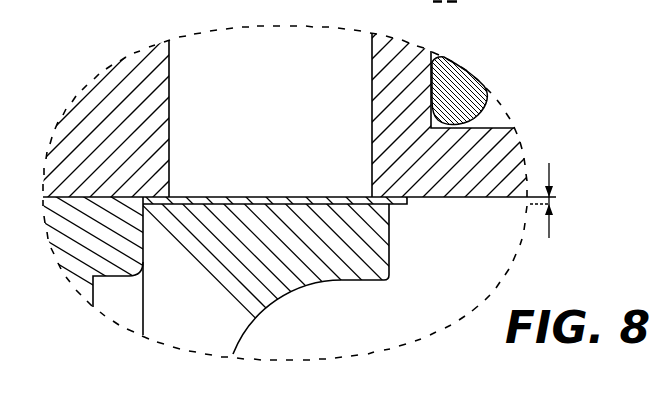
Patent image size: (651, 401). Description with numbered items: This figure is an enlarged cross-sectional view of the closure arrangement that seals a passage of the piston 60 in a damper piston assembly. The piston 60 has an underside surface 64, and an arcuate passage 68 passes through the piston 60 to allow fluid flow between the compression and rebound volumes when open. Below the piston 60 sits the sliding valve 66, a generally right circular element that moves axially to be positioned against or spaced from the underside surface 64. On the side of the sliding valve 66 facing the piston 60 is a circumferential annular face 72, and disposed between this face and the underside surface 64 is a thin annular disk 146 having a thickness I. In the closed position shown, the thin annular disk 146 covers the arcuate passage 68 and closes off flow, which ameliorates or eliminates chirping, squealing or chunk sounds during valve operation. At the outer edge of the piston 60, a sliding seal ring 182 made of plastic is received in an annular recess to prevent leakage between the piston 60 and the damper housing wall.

The piston 60 is at (143, 89).
The underside surface 64 is at (78, 193).
The sliding valve 66 is at (157, 300).
The arcuate passages 68 is at (207, 70).
The circumferential annular face 72 is at (290, 192).
The thin annular disk 146 is at (408, 203).
The sliding seal ring 182 is at (470, 77).
The thickness I is at (550, 172).